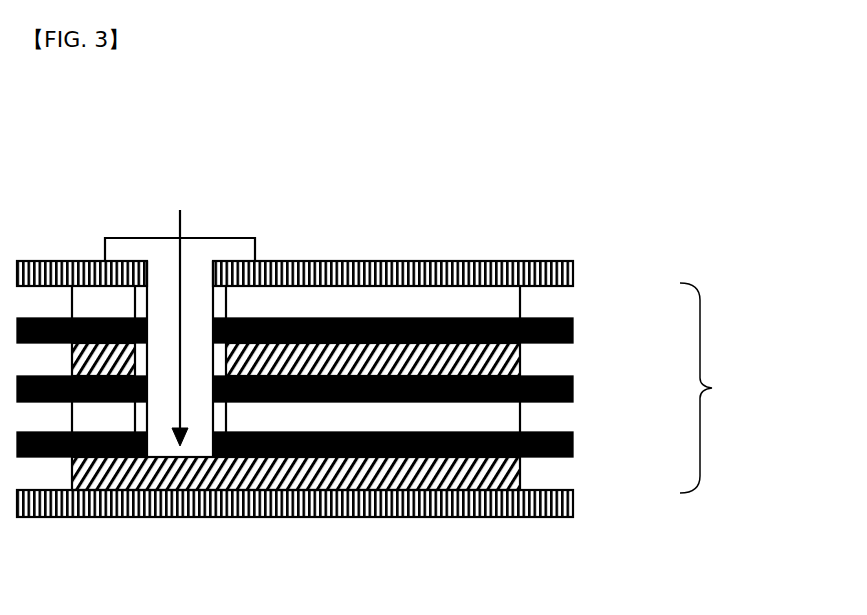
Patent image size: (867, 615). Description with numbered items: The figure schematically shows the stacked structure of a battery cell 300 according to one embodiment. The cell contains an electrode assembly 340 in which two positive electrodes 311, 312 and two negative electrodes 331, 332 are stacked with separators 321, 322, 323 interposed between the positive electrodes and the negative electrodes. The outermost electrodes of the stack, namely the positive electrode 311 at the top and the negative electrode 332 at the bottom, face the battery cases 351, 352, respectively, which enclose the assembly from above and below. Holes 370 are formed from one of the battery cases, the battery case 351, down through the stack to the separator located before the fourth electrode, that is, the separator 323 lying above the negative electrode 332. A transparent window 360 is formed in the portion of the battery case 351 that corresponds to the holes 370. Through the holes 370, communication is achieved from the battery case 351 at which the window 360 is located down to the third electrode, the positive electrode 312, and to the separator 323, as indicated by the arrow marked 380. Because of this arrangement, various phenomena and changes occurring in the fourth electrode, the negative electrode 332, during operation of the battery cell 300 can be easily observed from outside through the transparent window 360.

The battery cell 300 is at (94, 164).
The positive electrode 311 is at (522, 304).
The positive electrode 312 is at (522, 420).
The separator 321 is at (573, 330).
The separator 322 is at (573, 384).
The separator 323 is at (573, 442).
The negative electrode 331 is at (522, 362).
The negative electrode 332 is at (522, 478).
The electrode assembly 340 is at (723, 388).
The battery case 351 is at (537, 261).
The battery case 352 is at (537, 517).
The transparent window 360 is at (256, 236).
The holes 370 is at (143, 303).
The communication 380 is at (183, 315).